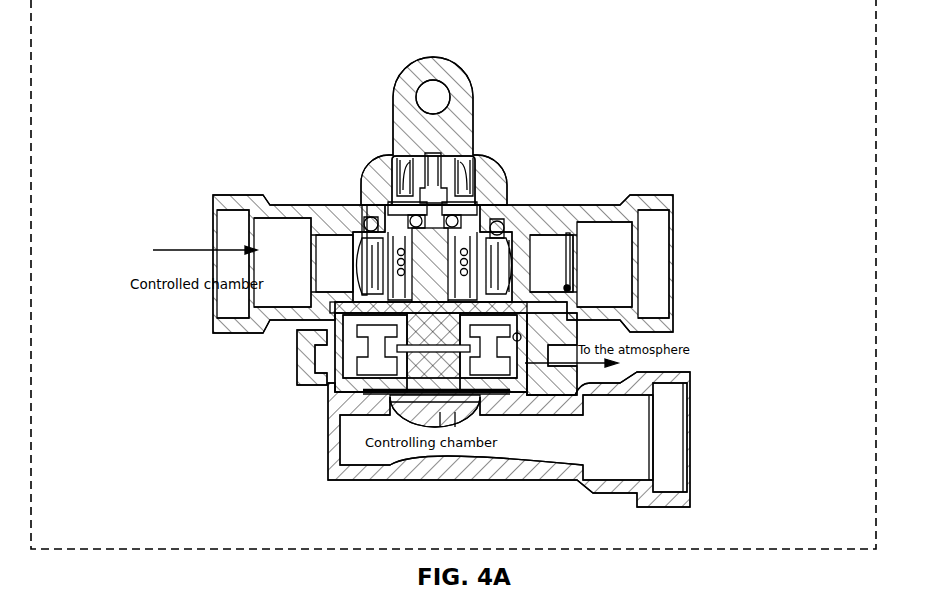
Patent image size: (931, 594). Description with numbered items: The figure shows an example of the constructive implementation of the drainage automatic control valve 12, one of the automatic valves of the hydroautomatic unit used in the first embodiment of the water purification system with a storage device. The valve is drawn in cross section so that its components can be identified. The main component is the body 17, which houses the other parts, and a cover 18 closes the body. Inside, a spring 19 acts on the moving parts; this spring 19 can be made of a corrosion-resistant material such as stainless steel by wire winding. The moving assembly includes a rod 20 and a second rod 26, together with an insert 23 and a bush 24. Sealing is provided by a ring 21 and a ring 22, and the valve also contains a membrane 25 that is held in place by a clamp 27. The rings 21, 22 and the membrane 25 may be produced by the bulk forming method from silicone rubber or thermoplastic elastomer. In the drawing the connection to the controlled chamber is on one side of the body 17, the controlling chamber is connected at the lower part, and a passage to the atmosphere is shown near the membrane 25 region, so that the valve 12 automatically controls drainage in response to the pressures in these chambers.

The drainage automatic control valve 12 is at (453, 274).
The body 17 is at (650, 377).
The cover 18 is at (457, 145).
The spring 19 is at (455, 245).
The rod 20 is at (480, 193).
The ring 21 is at (388, 195).
The ring 22 is at (363, 228).
The insert 23 is at (365, 215).
The bush 24 is at (467, 335).
The membrane 25 is at (517, 337).
The rod 26 is at (567, 288).
The clamp 27 is at (303, 340).